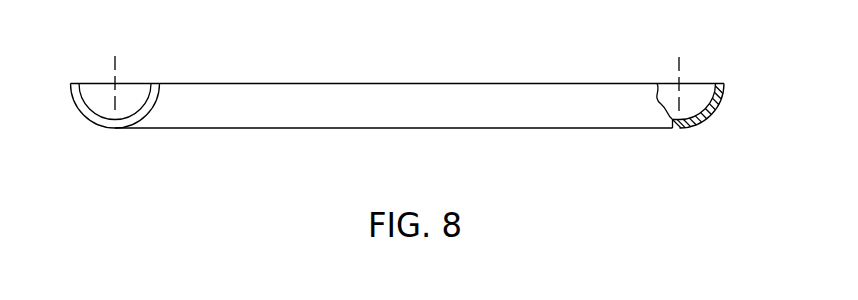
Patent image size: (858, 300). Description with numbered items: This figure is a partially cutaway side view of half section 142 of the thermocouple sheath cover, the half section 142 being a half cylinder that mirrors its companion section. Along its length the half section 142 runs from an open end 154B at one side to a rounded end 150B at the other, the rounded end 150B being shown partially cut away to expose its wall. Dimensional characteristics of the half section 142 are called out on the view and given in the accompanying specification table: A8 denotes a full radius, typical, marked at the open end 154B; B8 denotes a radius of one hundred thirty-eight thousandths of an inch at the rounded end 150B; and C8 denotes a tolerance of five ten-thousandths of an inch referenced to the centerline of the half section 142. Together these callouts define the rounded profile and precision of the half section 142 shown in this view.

The half section 142 is at (178, 142).
The open end 154B is at (70, 84).
The full radius characteristic A8 is at (90, 107).
The rounded end 150B is at (723, 84).
The dimensional characteristic C8 is at (724, 84).
The radius characteristic B8 is at (703, 117).